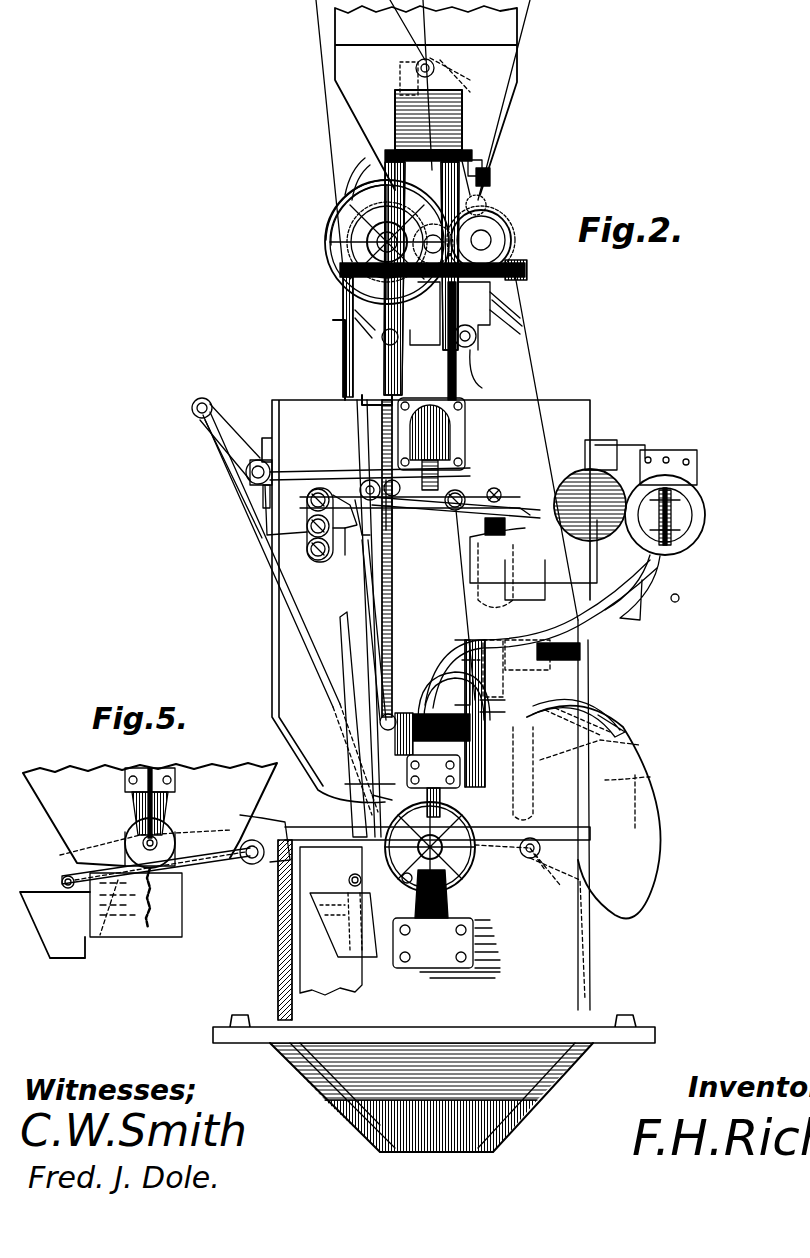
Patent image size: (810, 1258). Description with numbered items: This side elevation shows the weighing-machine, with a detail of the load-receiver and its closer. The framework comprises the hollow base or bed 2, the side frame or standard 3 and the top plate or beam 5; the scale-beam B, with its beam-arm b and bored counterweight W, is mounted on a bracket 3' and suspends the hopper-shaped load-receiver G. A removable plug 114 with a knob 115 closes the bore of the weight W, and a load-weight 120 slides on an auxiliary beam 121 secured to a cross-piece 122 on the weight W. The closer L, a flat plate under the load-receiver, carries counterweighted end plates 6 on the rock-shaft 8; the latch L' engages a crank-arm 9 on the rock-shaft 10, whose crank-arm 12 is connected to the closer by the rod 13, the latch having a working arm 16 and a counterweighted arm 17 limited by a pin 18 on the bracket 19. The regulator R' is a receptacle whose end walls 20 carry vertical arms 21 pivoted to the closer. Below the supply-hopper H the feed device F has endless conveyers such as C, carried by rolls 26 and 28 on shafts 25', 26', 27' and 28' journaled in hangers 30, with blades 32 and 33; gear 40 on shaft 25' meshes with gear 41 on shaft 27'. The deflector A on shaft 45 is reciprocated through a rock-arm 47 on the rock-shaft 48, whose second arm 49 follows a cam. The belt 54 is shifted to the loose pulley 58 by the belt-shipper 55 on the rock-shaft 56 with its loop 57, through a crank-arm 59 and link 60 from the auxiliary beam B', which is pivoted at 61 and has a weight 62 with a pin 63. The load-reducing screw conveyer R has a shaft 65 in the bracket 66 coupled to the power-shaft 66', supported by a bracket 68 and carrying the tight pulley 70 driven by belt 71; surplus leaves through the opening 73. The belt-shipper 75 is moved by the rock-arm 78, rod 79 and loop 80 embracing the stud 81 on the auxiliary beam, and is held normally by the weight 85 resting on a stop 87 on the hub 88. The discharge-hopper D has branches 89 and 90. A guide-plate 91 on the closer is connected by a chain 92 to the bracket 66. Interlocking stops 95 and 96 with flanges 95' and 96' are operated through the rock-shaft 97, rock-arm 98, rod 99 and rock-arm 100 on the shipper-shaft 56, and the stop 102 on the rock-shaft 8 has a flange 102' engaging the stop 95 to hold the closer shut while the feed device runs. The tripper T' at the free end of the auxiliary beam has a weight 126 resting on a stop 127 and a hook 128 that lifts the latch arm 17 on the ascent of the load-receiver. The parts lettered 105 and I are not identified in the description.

In FIG. 2, the hollow base or bed 2 is at (566, 977).
In FIG. 2, the side frame or standard 3 is at (290, 613).
In FIG. 2, the bracket 3' is at (511, 576).
In FIG. 2, the top plate or beam 5 is at (446, 92).
In FIG. 2, the counterweighted end plate 6 is at (650, 802).
In FIG. 2, the transverse rock-shaft 8 is at (541, 862).
In FIG. 5, the transverse rock-shaft 8 is at (252, 864).
In FIG. 2, the crank-arm 9 is at (262, 523).
In FIG. 2, the rock-shaft 10 is at (246, 472).
In FIG. 2, the crank-arm 12 is at (228, 432).
In FIG. 2, the rod 13 is at (245, 512).
In FIG. 2, the working arm 16 is at (293, 530).
In FIG. 2, the counterweighted arm 17 is at (310, 495).
In FIG. 2, the pin 18 is at (320, 562).
In FIG. 2, the bracket 19 is at (305, 556).
In FIG. 2, the end wall 20 is at (335, 905).
In FIG. 5, the end wall 20 is at (72, 937).
In FIG. 2, the vertical arm 21 is at (348, 882).
In FIG. 5, the vertical arm 21 is at (62, 882).
In FIG. 2, the roll shaft 25' is at (352, 242).
In FIG. 2, the roll 26 is at (391, 278).
In FIG. 2, the roll shaft 26' is at (350, 378).
In FIG. 2, the roll shaft 27' is at (499, 199).
In FIG. 2, the roll 28 is at (492, 369).
In FIG. 2, the roll shaft 28' is at (453, 256).
In FIG. 2, the bearing or hanger 30 is at (428, 348).
In FIG. 2, the conveyer blade 32 is at (355, 326).
In FIG. 2, the conveyer blade 33 is at (512, 318).
In FIG. 2, the gear 40 is at (345, 240).
In FIG. 2, the gear 41 is at (500, 226).
In FIG. 2, the shaft 45 is at (420, 60).
In FIG. 2, the rock-arm 47 is at (398, 85).
In FIG. 2, the rock-shaft 48 is at (405, 150).
In FIG. 2, the rock-arm 49 is at (482, 162).
In FIG. 2, the driving belt 54 is at (329, 130).
In FIG. 2, the belt-shipper 55 is at (510, 243).
In FIG. 2, the rock-shaft 56 is at (528, 276).
In FIG. 2, the loop 57 is at (490, 178).
In FIG. 2, the loose pulley 58 is at (370, 190).
In FIG. 2, the crank-arm 59 is at (343, 288).
In FIG. 2, the longitudinal link 60 is at (350, 380).
In FIG. 2, the pivot 61 is at (455, 510).
In FIG. 2, the weight 62 is at (578, 522).
In FIG. 2, the stud or pin 63 is at (582, 470).
In FIG. 5, the conveyer shaft 65 is at (158, 838).
In FIG. 2, the bearing or bracket 66 is at (364, 783).
In FIG. 5, the bearing or bracket 66 is at (150, 788).
In FIG. 2, the power-shaft 66' is at (363, 806).
In FIG. 2, the bracket 68 is at (462, 888).
In FIG. 2, the tight pulley 70 is at (470, 806).
In FIG. 2, the belt 71 is at (360, 660).
In FIG. 5, the load-reducing opening 73 is at (125, 842).
In FIG. 2, the belt-shipper 75 is at (485, 758).
In FIG. 2, the rock-arm 78 is at (380, 728).
In FIG. 2, the rod 79 is at (393, 590).
In FIG. 2, the loop 80 is at (358, 512).
In FIG. 2, the pin or stud 81 is at (362, 481).
In FIG. 2, the weight 85 is at (404, 756).
In FIG. 2, the stop 87 is at (432, 740).
In FIG. 2, the hub 88 is at (430, 695).
In FIG. 2, the discharge-hopper branch 89 is at (350, 1090).
In FIG. 2, the discharge conduit 90 is at (380, 1130).
In FIG. 2, the guide-plate 91 is at (362, 945).
In FIG. 5, the guide-plate 91 is at (124, 927).
In FIG. 2, the chain 92 is at (395, 900).
In FIG. 5, the chain 92 is at (150, 898).
In FIG. 2, the interlocking stop 95 is at (505, 668).
In FIG. 2, the flange 95' is at (511, 763).
In FIG. 2, the interlocking stop 96 is at (446, 672).
In FIG. 2, the flange 96' is at (460, 654).
In FIG. 2, the rock-shaft 97 is at (488, 645).
In FIG. 2, the rock-arm 98 is at (562, 662).
In FIG. 2, the rod 99 is at (538, 392).
In FIG. 2, the rock-arm 100 is at (522, 268).
In FIG. 2, the stop 102 is at (604, 812).
In FIG. 2, the flange 102' is at (596, 716).
In FIG. 2, the link 105 is at (497, 708).
In FIG. 2, the removable plug 114 is at (684, 514).
In FIG. 2, the knob or handle 115 is at (675, 500).
In FIG. 2, the load-weight 120 is at (603, 442).
In FIG. 2, the auxiliary beam 121 is at (622, 445).
In FIG. 2, the cross-piece 122 is at (672, 452).
In FIG. 2, the tripper weight 126 is at (377, 475).
In FIG. 2, the stop 127 is at (405, 518).
In FIG. 2, the hook 128 is at (360, 548).
In FIG. 2, the agitating device or deflector A is at (440, 58).
In FIG. 2, the scale-beam B is at (390, 465).
In FIG. 2, the auxiliary beam B' is at (418, 500).
In FIG. 2, the conveyer C is at (431, 343).
In FIG. 2, the duplex discharge-hopper D is at (435, 1099).
In FIG. 2, the force-feeding device F is at (487, 240).
In FIG. 2, the load-receiver G is at (272, 628).
In FIG. 5, the load-receiver G is at (150, 814).
In FIG. 2, the supply-hopper H is at (517, 70).
In FIG. 2, the pivot I is at (517, 867).
In FIG. 5, the closer L is at (156, 870).
In FIG. 2, the latch L' is at (299, 525).
In FIG. 5, the load-reducing conveyer R is at (161, 838).
In FIG. 2, the regulator R' is at (331, 921).
In FIG. 5, the regulator R' is at (55, 925).
In FIG. 2, the tripper T' is at (343, 497).
In FIG. 2, the counterweight W is at (703, 519).
In FIG. 2, the beam-arm b is at (533, 535).